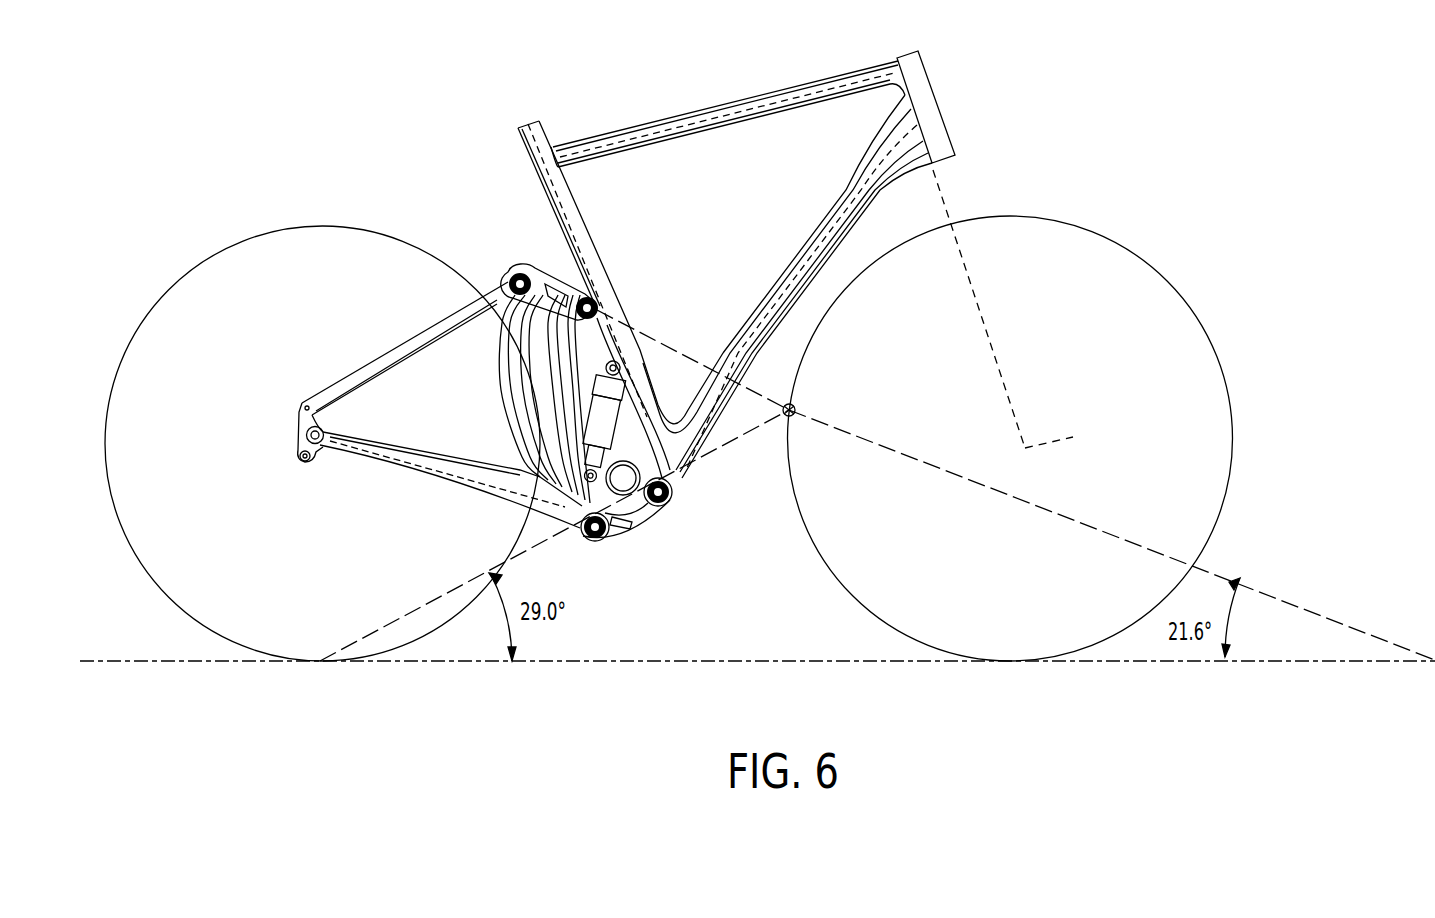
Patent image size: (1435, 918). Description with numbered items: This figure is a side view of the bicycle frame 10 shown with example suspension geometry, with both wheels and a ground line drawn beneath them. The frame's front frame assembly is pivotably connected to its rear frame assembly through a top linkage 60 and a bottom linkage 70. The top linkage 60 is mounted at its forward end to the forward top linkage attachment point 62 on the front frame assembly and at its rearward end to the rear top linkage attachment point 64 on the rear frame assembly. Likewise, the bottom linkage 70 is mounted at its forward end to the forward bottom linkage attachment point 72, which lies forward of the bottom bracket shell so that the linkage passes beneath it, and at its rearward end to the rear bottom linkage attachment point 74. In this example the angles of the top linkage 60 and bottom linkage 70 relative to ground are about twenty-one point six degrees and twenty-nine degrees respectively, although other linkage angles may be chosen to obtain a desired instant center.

The bicycle frame 10 is at (603, 124).
The top linkage 60 is at (542, 268).
The forward top linkage attachment point 62 is at (599, 306).
The rear top linkage attachment point 64 is at (512, 283).
The bottom linkage 70 is at (648, 529).
The forward bottom linkage attachment point 72 is at (669, 494).
The rear bottom linkage attachment point 74 is at (595, 537).